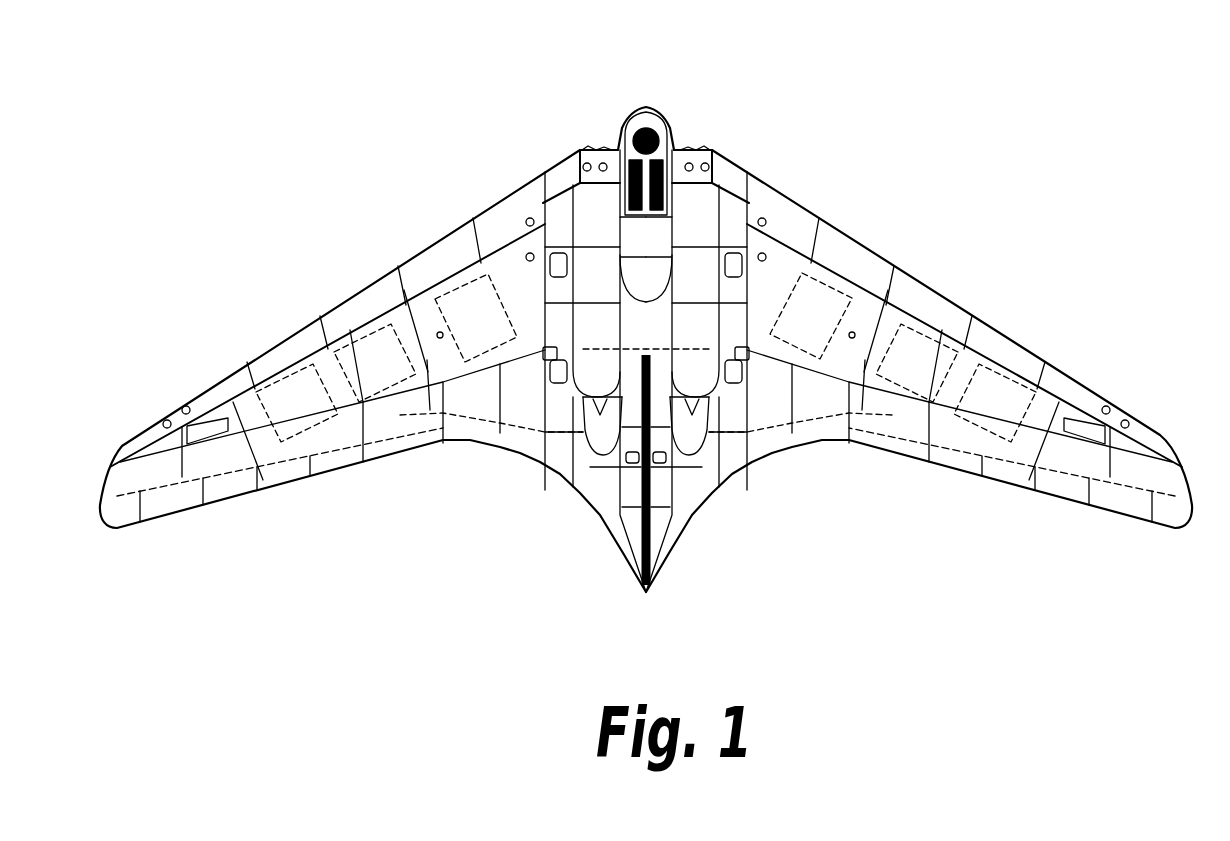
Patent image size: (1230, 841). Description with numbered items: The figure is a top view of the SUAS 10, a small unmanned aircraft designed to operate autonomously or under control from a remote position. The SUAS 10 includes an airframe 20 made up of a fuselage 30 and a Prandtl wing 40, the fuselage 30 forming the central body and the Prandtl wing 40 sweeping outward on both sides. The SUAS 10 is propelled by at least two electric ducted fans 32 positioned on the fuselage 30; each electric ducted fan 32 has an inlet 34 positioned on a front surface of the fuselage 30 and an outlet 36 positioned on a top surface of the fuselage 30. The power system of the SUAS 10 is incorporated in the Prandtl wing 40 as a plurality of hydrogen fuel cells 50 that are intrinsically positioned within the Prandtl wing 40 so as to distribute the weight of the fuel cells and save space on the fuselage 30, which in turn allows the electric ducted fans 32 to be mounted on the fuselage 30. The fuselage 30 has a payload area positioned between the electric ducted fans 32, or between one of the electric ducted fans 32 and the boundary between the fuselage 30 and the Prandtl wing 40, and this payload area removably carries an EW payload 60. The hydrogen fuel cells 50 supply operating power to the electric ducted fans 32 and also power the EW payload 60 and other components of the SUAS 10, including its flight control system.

The SUAS 10 is at (1045, 113).
The airframe 20 is at (791, 140).
The fuselage 30 is at (727, 162).
The electric ducted fan 32 is at (597, 293).
The inlet 34 is at (602, 130).
The outlet 36 is at (613, 452).
The Prandtl wing 40 is at (380, 276).
The hydrogen fuel cell 50 is at (297, 400).
The EW payload 60 is at (643, 237).